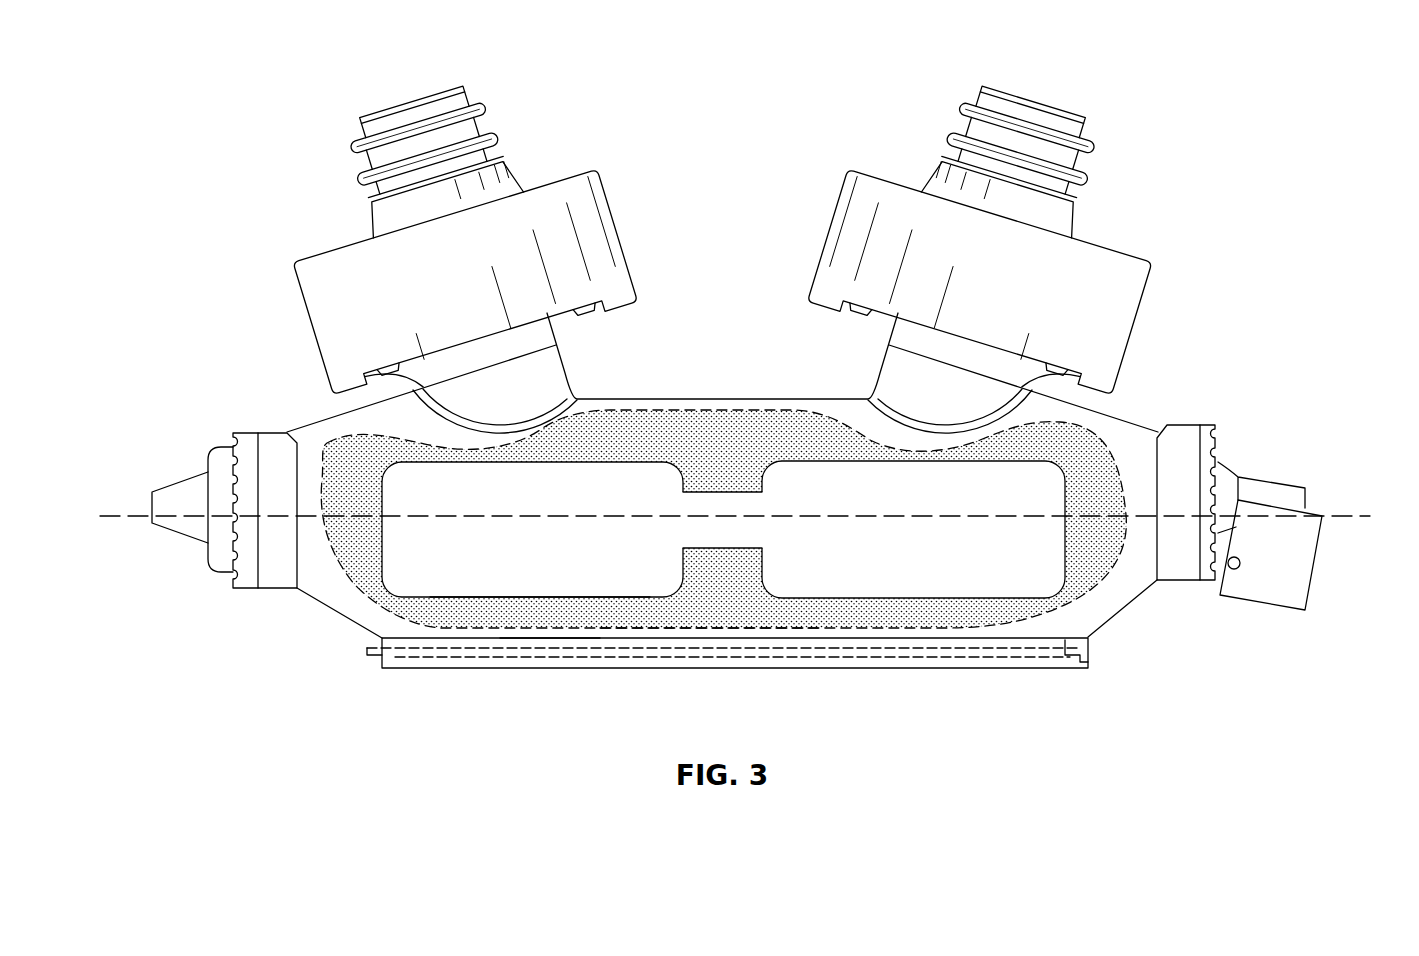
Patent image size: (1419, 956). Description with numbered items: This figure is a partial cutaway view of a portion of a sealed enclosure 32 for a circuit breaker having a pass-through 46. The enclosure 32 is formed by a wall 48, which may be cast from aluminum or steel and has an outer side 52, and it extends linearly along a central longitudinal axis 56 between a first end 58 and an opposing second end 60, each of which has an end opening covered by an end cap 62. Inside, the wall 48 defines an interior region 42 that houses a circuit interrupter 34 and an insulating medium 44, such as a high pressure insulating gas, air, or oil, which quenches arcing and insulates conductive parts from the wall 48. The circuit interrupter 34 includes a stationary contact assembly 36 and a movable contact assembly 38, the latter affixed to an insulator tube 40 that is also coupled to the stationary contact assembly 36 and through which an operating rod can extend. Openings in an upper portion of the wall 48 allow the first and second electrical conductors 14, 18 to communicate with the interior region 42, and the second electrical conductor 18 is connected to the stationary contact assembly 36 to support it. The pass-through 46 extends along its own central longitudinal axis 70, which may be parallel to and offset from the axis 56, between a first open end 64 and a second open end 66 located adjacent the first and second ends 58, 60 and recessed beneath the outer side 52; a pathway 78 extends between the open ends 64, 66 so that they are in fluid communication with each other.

The first electrical conductor 14 is at (1082, 181).
The second electrical conductor 18 is at (363, 181).
The sealed enclosure 32 is at (1145, 432).
The circuit interrupter 34 is at (650, 497).
The stationary contact assembly 36 is at (850, 497).
The movable contact assembly 38 is at (458, 590).
The insulator tube 40 is at (737, 503).
The interior region 42 is at (1057, 603).
The insulating medium 44 is at (712, 605).
The pass-through 46 is at (862, 655).
The wall 48 is at (1097, 603).
The outer side 52 is at (353, 603).
The central longitudinal axis 56 is at (1350, 516).
The first end 58 is at (1157, 582).
The second end 60 is at (300, 592).
The end cap 62 is at (240, 433).
The first open end 64 is at (1092, 670).
The second open end 66 is at (370, 668).
The central longitudinal axis 70 is at (353, 652).
The pathway 78 is at (548, 652).